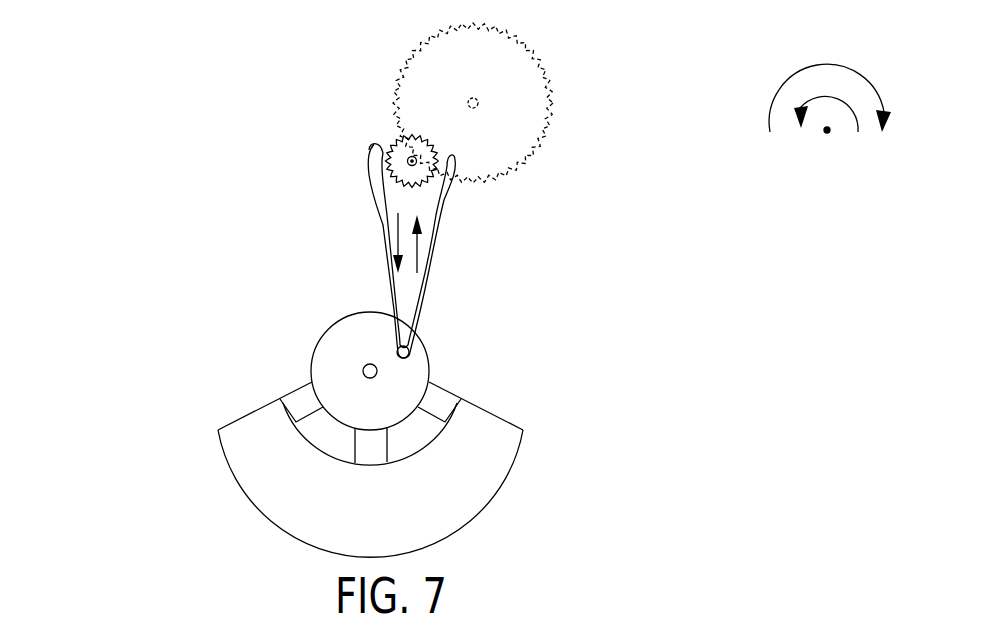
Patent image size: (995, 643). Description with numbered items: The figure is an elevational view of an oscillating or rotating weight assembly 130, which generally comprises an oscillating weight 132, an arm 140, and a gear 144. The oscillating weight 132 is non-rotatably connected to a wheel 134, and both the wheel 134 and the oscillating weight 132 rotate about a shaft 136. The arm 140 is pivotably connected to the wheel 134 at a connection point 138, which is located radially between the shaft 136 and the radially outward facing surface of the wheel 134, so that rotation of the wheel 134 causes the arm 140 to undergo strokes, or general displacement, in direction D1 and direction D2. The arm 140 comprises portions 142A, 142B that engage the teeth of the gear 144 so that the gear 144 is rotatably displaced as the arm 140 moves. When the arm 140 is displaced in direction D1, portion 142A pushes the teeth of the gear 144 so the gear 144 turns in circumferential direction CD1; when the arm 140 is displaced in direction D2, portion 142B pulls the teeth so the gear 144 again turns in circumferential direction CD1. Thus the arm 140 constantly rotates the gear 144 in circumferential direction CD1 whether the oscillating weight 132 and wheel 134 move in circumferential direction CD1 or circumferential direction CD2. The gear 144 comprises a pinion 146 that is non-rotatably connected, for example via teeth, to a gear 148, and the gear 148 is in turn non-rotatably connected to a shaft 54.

The oscillating weight assembly 130 is at (98, 91).
The oscillating weight 132 is at (468, 497).
The wheel 134 is at (423, 366).
The shaft 136 is at (363, 370).
The connection point 138 is at (410, 350).
The arm 140 is at (424, 239).
The portion 142A is at (443, 207).
The portion 142B is at (366, 157).
The gear 144 is at (428, 150).
The pinion 146 is at (409, 157).
The gear 148 is at (522, 57).
The shaft 54 is at (479, 106).
The direction D1 is at (419, 255).
The direction D2 is at (398, 238).
The circumferential direction CD1 is at (853, 110).
The circumferential direction CD2 is at (832, 73).